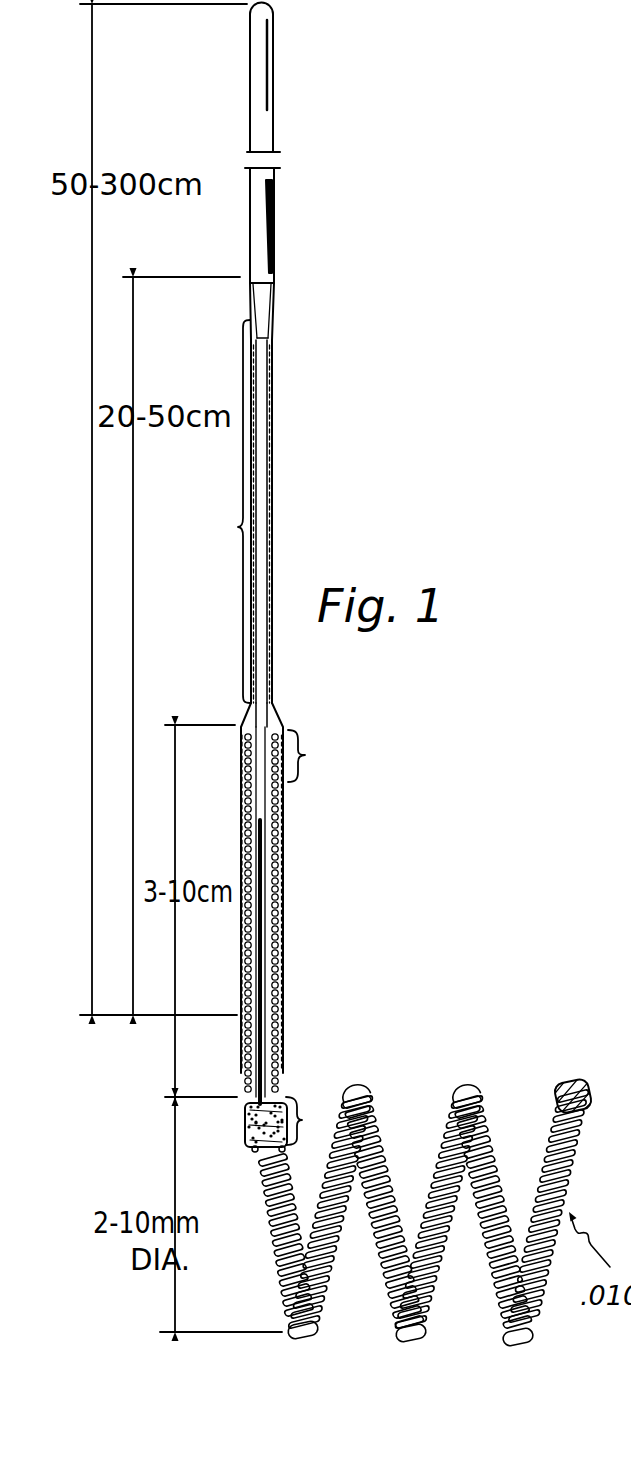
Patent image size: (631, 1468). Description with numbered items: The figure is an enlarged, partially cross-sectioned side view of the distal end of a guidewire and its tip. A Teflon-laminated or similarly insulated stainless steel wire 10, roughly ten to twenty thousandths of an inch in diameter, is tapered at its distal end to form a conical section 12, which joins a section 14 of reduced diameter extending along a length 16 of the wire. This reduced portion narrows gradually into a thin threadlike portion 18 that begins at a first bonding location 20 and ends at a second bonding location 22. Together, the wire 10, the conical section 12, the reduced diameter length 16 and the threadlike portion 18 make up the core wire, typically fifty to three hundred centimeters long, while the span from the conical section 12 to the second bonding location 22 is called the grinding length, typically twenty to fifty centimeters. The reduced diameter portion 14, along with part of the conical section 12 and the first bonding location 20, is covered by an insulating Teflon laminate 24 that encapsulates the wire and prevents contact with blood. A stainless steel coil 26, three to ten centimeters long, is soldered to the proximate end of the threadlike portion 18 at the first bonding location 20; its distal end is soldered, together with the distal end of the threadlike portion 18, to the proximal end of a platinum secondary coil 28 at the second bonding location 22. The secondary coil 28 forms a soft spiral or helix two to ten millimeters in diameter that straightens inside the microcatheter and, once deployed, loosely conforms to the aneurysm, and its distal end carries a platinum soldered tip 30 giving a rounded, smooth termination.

The stainless steel wire 10 is at (306, 212).
The conical section 12 is at (263, 310).
The section of reduced diameter 14 is at (263, 423).
The length of wire 16 is at (229, 511).
The threadlike portion 18 is at (283, 886).
The first bonding location 20 is at (307, 754).
The second bonding location 22 is at (303, 1113).
The insulating Teflon laminate 24 is at (272, 472).
The stainless steel coil 26 is at (262, 822).
The platinum secondary coil 28 is at (533, 1297).
The platinum soldered tip 30 is at (584, 1082).